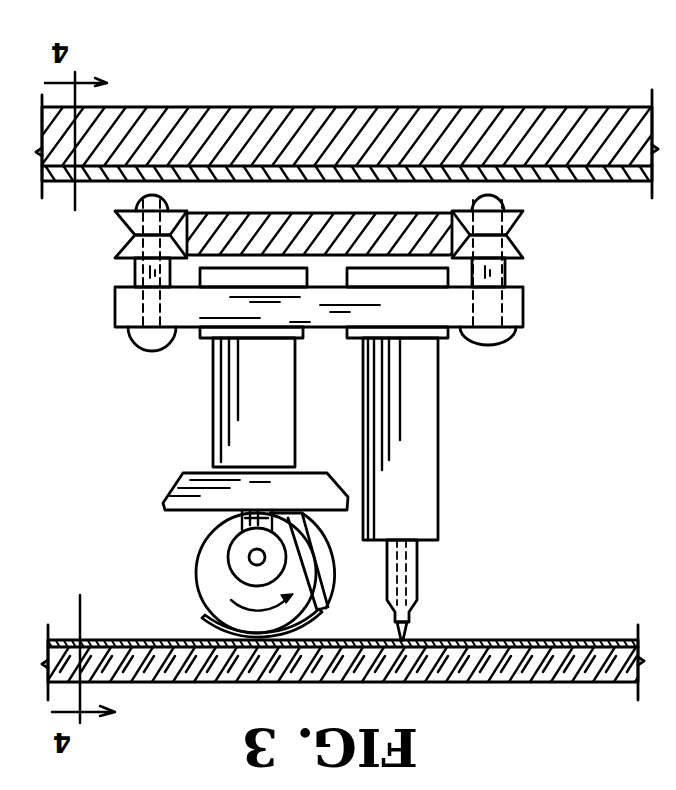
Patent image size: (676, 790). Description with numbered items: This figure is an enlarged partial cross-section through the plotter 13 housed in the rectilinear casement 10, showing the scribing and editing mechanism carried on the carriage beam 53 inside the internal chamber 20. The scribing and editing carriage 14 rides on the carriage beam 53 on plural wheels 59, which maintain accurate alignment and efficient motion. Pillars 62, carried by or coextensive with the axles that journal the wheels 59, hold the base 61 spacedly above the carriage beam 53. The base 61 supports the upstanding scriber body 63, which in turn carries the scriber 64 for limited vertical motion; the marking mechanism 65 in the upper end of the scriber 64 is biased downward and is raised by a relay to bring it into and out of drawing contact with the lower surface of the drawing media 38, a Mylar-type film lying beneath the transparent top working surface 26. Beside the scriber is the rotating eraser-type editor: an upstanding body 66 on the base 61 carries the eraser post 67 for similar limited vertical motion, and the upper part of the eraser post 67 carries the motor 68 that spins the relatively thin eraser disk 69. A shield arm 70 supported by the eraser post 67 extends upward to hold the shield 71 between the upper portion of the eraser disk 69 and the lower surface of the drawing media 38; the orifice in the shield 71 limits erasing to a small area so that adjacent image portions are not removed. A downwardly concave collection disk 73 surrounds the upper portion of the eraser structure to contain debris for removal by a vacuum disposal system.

The rectilinear casement 10 is at (278, 108).
The base 61 is at (405, 140).
The carriage beam 53 is at (374, 215).
The carriage wheels 59 is at (512, 214).
The plotter 13 is at (115, 262).
The scribing and editing carriage 14 is at (116, 313).
The pillars 62 is at (176, 340).
The upstanding body 66 is at (265, 400).
The collection disk 73 is at (297, 490).
The eraser post 67 is at (245, 519).
The motor 68 is at (238, 557).
The eraser disk 69 is at (210, 578).
The shield arm 70 is at (307, 568).
The shield 71 is at (200, 620).
The scriber body 63 is at (418, 421).
The scriber 64 is at (407, 588).
The marking mechanism 65 is at (405, 632).
The internal chamber 20 is at (486, 458).
The top working surface 26 is at (480, 662).
The drawing media 38 is at (575, 640).